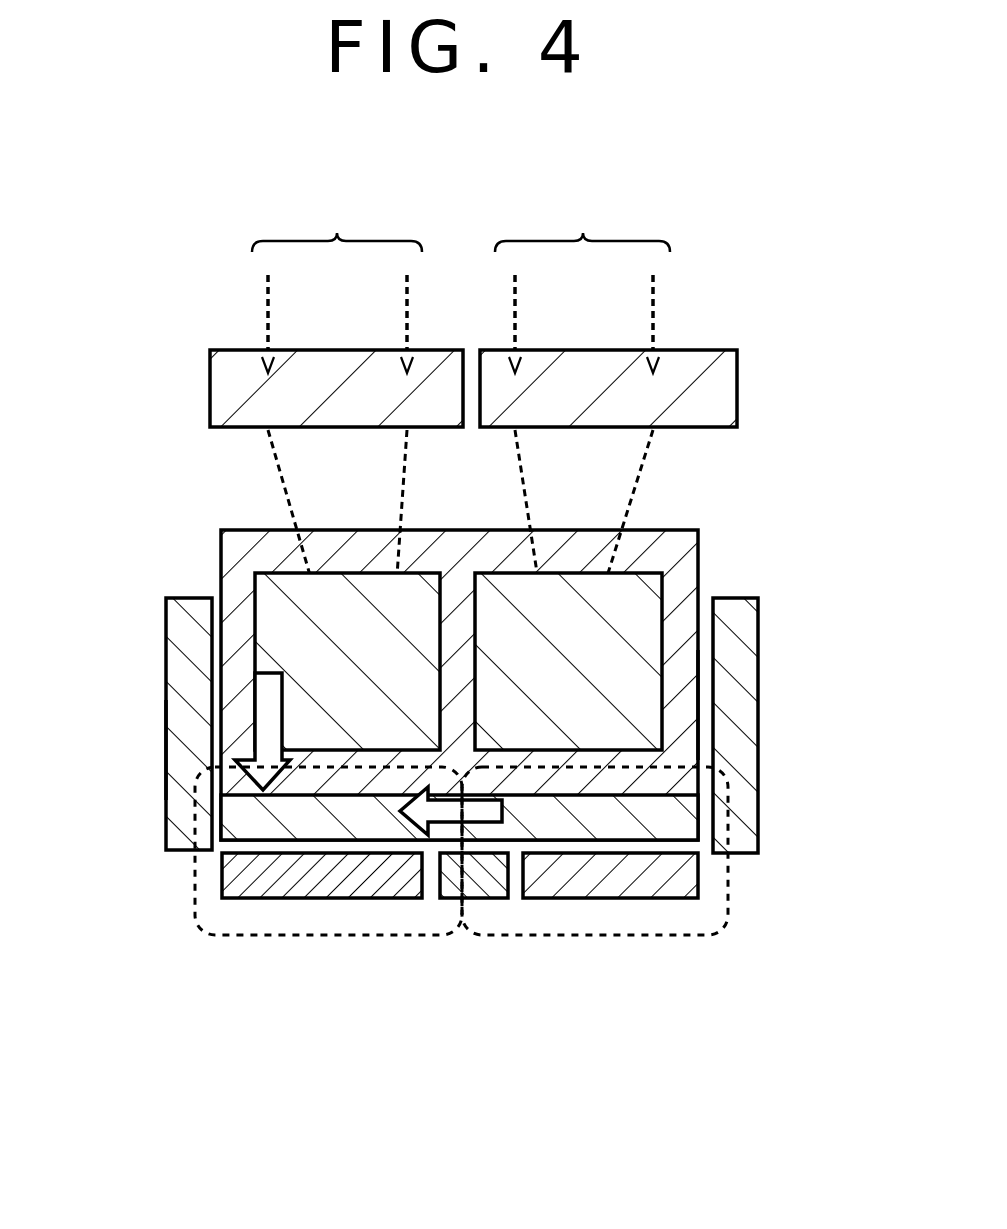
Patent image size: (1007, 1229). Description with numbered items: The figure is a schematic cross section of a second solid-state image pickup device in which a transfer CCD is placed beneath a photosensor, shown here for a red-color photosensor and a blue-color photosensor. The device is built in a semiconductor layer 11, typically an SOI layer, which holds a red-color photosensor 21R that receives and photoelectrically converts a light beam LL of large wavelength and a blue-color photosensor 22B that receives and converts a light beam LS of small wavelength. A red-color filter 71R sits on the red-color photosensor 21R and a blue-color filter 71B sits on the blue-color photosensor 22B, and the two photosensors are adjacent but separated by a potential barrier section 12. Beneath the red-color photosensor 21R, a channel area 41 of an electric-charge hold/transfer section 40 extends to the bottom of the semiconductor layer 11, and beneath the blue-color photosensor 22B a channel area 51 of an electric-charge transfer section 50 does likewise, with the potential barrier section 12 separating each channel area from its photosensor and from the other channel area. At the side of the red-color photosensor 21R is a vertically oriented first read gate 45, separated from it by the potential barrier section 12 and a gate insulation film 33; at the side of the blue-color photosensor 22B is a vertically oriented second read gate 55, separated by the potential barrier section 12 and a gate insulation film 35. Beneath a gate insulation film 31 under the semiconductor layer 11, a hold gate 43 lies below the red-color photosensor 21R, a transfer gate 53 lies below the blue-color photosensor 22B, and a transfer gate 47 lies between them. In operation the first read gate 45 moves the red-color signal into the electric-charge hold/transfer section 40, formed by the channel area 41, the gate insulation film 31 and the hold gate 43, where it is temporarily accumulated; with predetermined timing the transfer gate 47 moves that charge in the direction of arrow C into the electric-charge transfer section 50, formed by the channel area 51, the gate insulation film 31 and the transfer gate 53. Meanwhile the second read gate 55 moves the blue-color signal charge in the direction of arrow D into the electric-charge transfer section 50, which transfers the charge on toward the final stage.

The semiconductor layer 11 is at (700, 535).
The potential barrier section 12 is at (690, 568).
The red-color photosensor 21R is at (652, 645).
The blue-color photosensor 22B is at (262, 582).
The gate insulation film 31 is at (322, 848).
The gate insulation film 33 is at (703, 703).
The gate insulation film 35 is at (217, 645).
The electric-charge hold/transfer section 40 is at (728, 917).
The channel area 41 is at (683, 828).
The hold gate 43 is at (650, 893).
The first read gate 45 is at (760, 738).
The transfer gate 47 is at (478, 898).
The electric-charge transfer section 50 is at (193, 915).
The channel area 51 is at (387, 828).
The transfer gate 53 is at (280, 895).
The second read gate 55 is at (168, 750).
The blue-color filter 71B is at (212, 393).
The red-color filter 71R is at (740, 385).
The arrow C is at (448, 845).
The arrow D is at (257, 698).
The light beam LS is at (337, 225).
The light beam LL is at (582, 225).